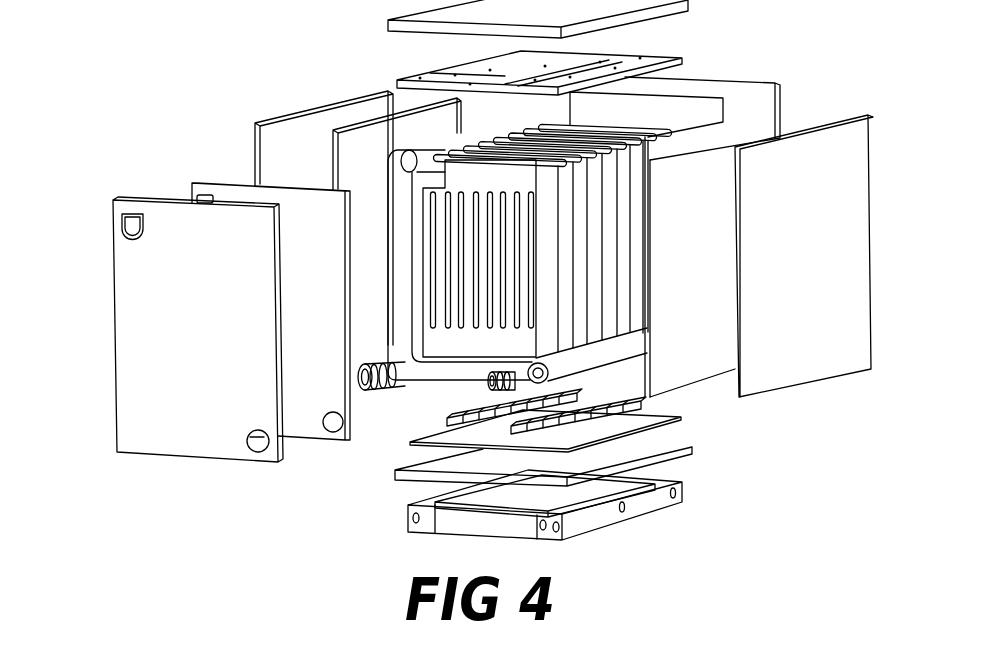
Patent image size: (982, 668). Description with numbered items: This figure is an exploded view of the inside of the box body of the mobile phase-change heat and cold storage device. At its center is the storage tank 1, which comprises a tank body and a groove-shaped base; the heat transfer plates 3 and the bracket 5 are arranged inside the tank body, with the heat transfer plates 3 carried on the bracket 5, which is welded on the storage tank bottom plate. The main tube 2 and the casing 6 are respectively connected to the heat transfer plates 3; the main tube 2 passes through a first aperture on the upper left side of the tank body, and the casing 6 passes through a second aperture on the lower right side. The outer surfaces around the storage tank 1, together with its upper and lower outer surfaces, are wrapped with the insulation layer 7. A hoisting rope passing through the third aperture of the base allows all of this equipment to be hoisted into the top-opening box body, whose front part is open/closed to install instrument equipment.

The storage tank 1 is at (669, 500).
The main tube 2 is at (393, 333).
The heat transfer plate 3 is at (444, 283).
The bracket 5 is at (455, 417).
The casing 6 is at (515, 369).
The insulation layer 7 is at (424, 477).